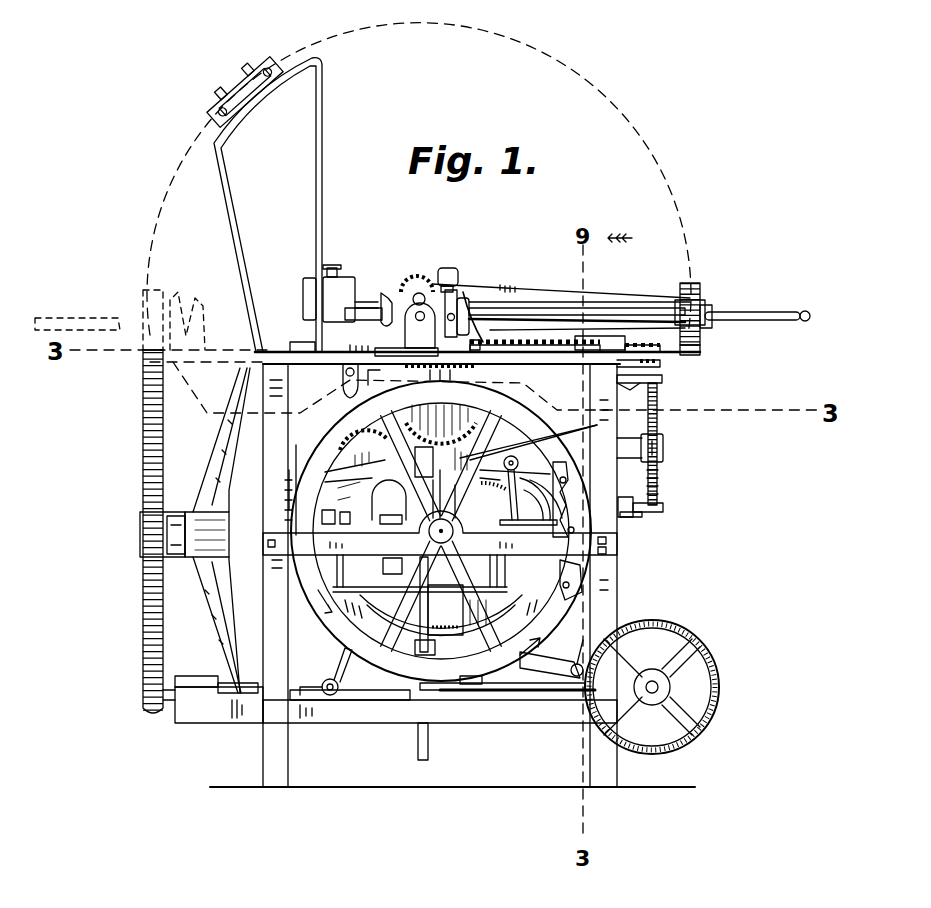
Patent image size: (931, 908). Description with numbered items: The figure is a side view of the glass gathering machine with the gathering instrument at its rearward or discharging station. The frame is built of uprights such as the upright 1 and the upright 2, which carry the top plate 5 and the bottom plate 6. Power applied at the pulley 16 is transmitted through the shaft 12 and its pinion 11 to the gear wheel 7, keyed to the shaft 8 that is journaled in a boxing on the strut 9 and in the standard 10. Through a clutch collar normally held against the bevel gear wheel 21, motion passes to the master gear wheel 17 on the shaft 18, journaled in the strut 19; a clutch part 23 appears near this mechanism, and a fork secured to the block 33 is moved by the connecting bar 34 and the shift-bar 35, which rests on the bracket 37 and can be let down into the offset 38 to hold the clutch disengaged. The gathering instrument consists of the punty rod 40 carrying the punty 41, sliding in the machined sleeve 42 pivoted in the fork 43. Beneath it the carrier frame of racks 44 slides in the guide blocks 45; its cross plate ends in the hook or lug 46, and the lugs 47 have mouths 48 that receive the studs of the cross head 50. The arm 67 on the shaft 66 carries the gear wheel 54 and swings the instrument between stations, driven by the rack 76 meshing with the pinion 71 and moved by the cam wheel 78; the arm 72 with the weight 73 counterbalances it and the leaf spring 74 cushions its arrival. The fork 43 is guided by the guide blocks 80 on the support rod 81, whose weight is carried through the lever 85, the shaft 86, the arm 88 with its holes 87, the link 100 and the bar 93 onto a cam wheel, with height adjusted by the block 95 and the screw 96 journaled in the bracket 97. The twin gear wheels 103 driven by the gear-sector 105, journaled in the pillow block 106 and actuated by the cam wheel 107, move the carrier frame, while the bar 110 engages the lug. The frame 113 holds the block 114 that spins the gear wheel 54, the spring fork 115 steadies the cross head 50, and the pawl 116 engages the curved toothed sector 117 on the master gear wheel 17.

The upright 1 is at (263, 450).
The upright 2 is at (618, 598).
The top plate 5 is at (268, 350).
The bottom plate 6 is at (355, 705).
The gear wheel 7 is at (150, 445).
The shaft 8 is at (232, 560).
The strut 9 is at (216, 592).
The standard 10 is at (392, 566).
The pinion 11 is at (166, 672).
The shaft 12 is at (230, 700).
The pulley 16 is at (703, 646).
The master gear wheel 17 is at (310, 575).
The shaft 18 is at (432, 538).
The strut 19 is at (622, 546).
The bevel gear wheel 21 is at (292, 468).
The block 23 is at (425, 648).
The block 33 is at (325, 682).
The connecting bar 34 is at (442, 585).
The shift-bar 35 is at (628, 498).
The bracket 37 is at (665, 507).
The offset 38 is at (660, 490).
The punty rod 40 is at (374, 305).
The punty 41 is at (760, 318).
The machined sleeve 42 is at (622, 302).
The fork 43 is at (406, 329).
The racks 44 is at (540, 353).
The guide blocks 45 is at (280, 350).
The hook or lug 46 is at (690, 348).
The lugs 47 is at (400, 333).
The mouth 48 is at (396, 300).
The cross head 50 is at (458, 320).
The gear wheel 54 is at (696, 285).
The shaft 66 is at (420, 285).
The arm 67 is at (600, 294).
The pinion 71 is at (418, 278).
The arm 72 is at (385, 300).
The weight 73 is at (340, 293).
The leaf spring 74 is at (600, 342).
The rack 76 is at (457, 270).
The cam wheel 78 is at (385, 630).
The guide blocks 80 is at (372, 385).
The support rod 81 is at (435, 465).
The lever 85 is at (520, 700).
The shaft 86 is at (580, 660).
The holes 87 is at (530, 692).
The arm 88 is at (545, 658).
The bar 93 is at (630, 445).
The block 95 is at (664, 450).
The screw 96 is at (658, 400).
The bracket 97 is at (648, 380).
The link 100 is at (518, 490).
The twin gear wheels 103 is at (470, 372).
The gear-sector 105 is at (548, 438).
The pillow block 106 is at (470, 690).
The cam wheel 107 is at (364, 492).
The bar 110 is at (483, 346).
The frame 113 is at (240, 222).
The block 114 is at (230, 90).
The spring fork 115 is at (485, 296).
The pawl 116 is at (350, 390).
The curved toothed sector 117 is at (578, 585).